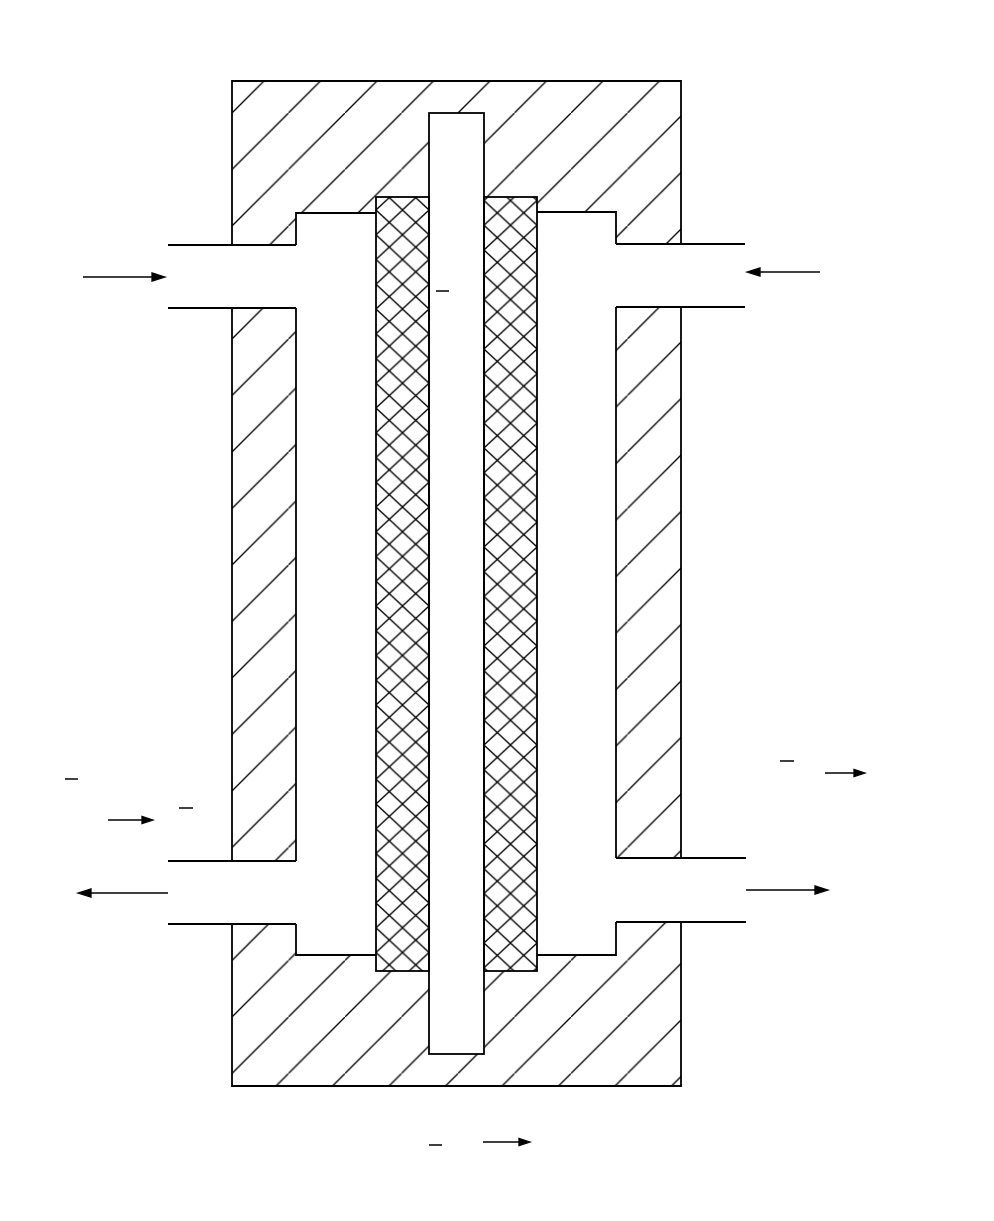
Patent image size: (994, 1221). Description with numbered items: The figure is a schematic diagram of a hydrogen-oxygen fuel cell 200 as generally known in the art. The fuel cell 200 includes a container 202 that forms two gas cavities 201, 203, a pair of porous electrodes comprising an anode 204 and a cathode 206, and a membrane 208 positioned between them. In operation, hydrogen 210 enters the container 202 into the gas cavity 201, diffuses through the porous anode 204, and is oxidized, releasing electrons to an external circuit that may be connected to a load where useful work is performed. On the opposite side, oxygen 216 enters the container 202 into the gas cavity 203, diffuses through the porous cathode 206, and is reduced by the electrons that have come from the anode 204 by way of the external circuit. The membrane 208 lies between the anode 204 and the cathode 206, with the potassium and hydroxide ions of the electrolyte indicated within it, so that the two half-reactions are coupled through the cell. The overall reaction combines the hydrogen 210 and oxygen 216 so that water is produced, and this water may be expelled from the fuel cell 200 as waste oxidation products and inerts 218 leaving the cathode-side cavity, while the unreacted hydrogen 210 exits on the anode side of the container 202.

The fuel cell 200 is at (627, 39).
The container 202 is at (681, 148).
The oxygen 216 is at (121, 275).
The hydrogen 210 is at (787, 272).
The gas cavity 203 is at (357, 549).
The membrane 208 is at (479, 546).
The gas cavity 201 is at (600, 576).
The cathode 206 is at (400, 868).
The anode 204 is at (515, 910).
The waste oxidation products and inerts 218 is at (140, 893).